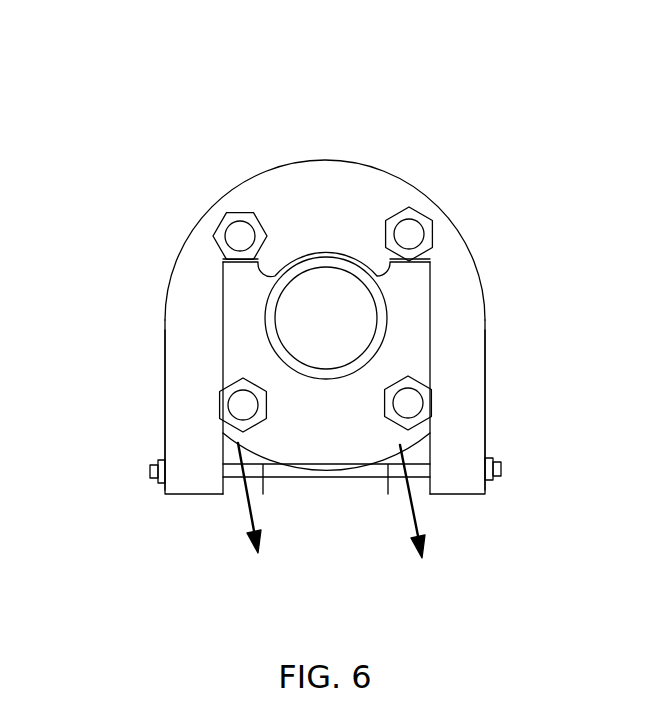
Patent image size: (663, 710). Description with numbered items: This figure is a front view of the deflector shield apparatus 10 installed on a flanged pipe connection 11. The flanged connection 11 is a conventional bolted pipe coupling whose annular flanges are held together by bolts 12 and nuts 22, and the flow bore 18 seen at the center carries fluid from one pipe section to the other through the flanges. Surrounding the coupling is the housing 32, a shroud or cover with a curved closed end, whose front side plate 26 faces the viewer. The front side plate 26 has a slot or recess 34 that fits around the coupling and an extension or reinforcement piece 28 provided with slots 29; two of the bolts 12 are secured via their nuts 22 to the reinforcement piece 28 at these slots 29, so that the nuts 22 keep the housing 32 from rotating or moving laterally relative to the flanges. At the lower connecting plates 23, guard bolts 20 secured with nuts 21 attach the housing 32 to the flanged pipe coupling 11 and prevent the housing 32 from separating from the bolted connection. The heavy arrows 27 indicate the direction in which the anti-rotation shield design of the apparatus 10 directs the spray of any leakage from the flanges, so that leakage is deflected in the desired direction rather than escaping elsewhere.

The deflector shield apparatus 10 is at (494, 147).
The flanged pipe connection 11 is at (415, 350).
The bolt 12 is at (240, 230).
The flow bore 18 is at (340, 332).
The guard bolt 20 is at (372, 478).
The nut 21 is at (157, 483).
The nut 22 is at (240, 232).
The connecting plate 23 is at (165, 407).
The front side plate 26 is at (182, 338).
The arrow 27 is at (421, 292).
The reinforcement piece 28 is at (368, 217).
The slot 29 is at (219, 259).
The housing 32 is at (168, 293).
The slot or recess 34 is at (245, 352).